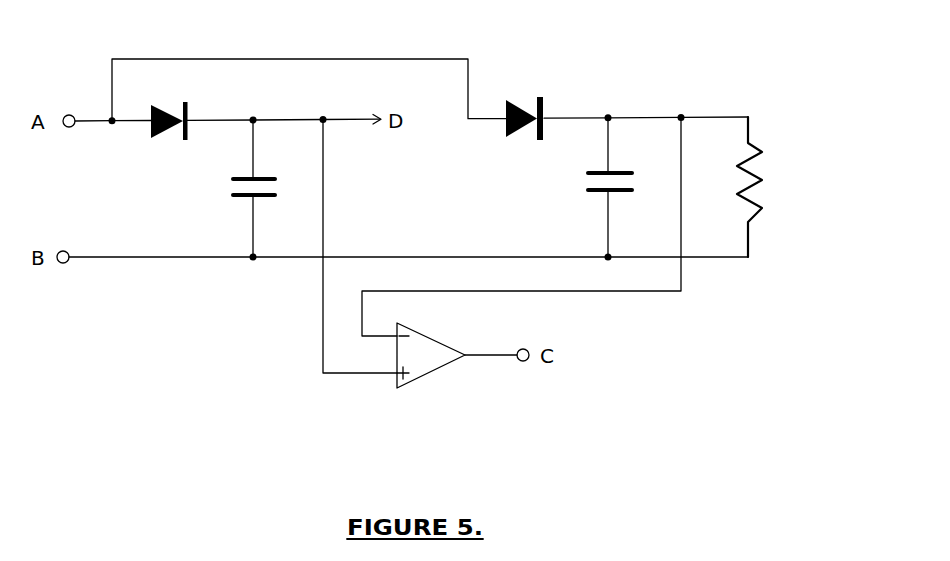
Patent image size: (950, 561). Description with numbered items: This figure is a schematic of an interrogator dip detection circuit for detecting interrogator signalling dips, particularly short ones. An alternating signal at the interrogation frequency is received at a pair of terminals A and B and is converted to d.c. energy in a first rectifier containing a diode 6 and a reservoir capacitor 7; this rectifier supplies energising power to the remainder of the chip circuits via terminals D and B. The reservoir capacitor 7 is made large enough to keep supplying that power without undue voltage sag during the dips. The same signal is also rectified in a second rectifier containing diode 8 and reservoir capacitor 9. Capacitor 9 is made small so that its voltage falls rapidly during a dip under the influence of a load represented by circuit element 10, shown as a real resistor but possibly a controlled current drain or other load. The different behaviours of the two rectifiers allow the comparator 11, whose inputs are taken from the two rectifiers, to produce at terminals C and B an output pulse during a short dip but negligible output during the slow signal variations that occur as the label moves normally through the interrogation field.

The diode 6 is at (153, 146).
The reservoir capacitor 7 is at (237, 207).
The diode 8 is at (505, 145).
The reservoir capacitor 9 is at (588, 210).
The circuit element 10 is at (768, 200).
The comparator 11 is at (428, 393).